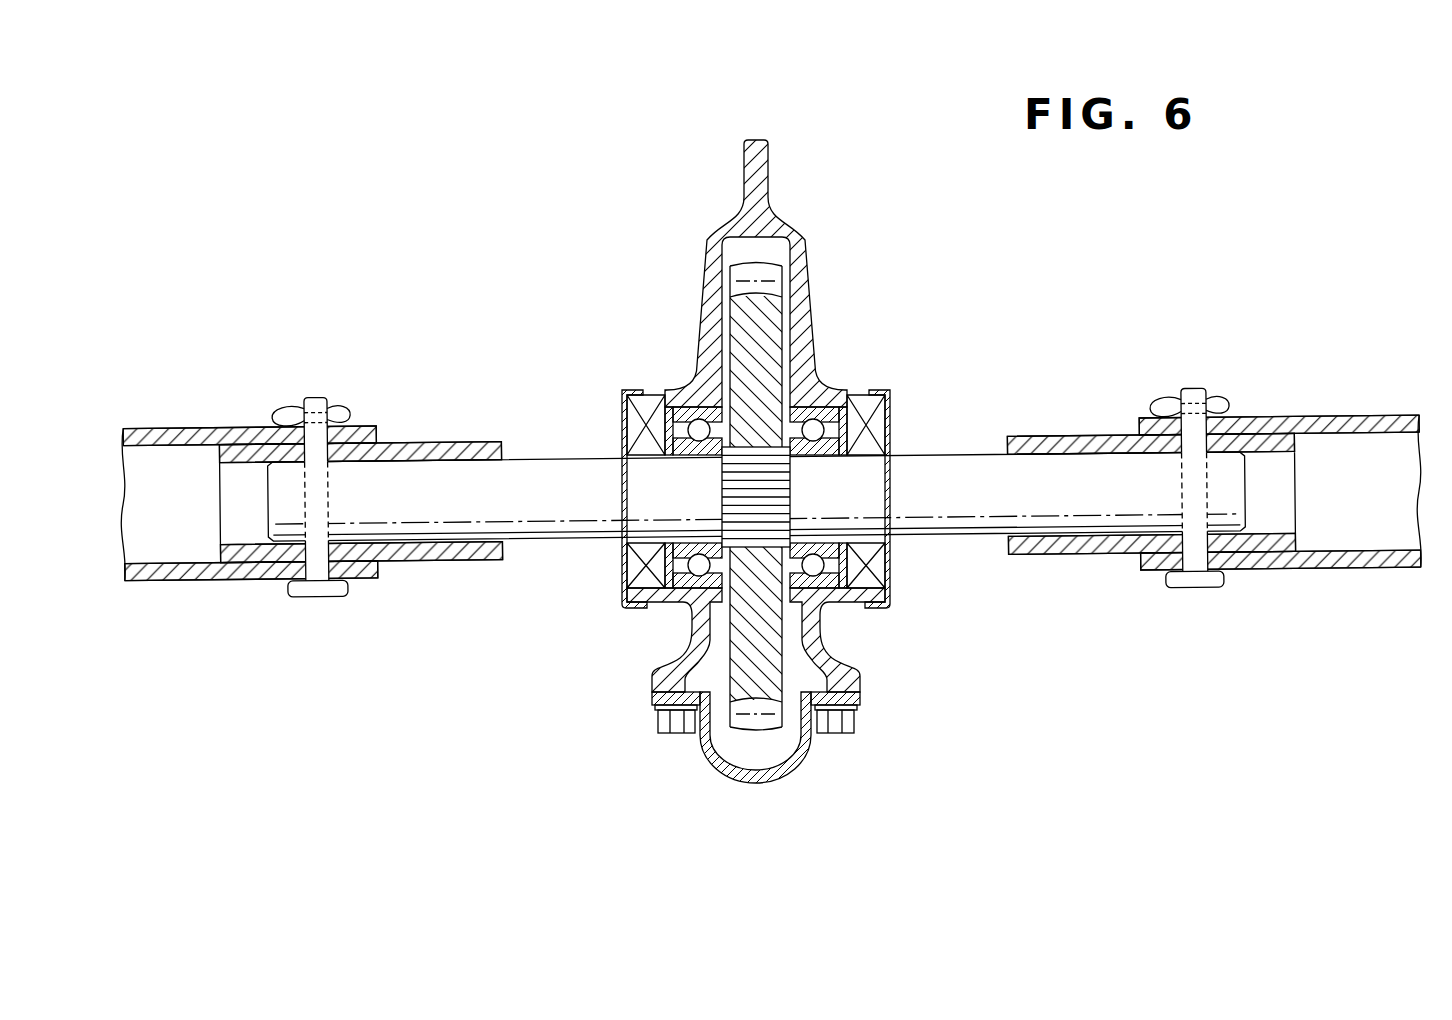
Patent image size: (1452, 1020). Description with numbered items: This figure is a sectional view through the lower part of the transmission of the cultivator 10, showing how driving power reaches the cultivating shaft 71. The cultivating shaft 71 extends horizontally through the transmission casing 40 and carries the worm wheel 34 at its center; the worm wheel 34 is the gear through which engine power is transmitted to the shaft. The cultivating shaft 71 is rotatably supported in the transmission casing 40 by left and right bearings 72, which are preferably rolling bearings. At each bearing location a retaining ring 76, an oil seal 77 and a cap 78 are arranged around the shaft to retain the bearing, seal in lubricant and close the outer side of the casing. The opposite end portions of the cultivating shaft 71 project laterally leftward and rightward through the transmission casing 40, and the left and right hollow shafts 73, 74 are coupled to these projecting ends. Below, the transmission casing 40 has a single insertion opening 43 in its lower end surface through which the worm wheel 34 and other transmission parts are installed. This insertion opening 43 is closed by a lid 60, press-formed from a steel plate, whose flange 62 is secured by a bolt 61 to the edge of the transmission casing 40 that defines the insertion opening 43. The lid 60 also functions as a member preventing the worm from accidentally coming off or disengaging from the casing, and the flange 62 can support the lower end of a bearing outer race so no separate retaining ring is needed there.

The cultivator 10 is at (335, 207).
The worm wheel 34 is at (775, 645).
The transmission casing 40 is at (791, 184).
The insertion opening 43 is at (698, 672).
The lid 60 is at (753, 782).
The bolt 61 is at (677, 735).
The flange 62 is at (658, 700).
The cultivating shaft 71 is at (978, 500).
The bearings 72 is at (698, 403).
The hollow shaft 73 is at (410, 556).
The hollow shaft 74 is at (178, 575).
The retaining ring 76 is at (667, 392).
The oil seal 77 is at (635, 393).
The cap 78 is at (620, 413).